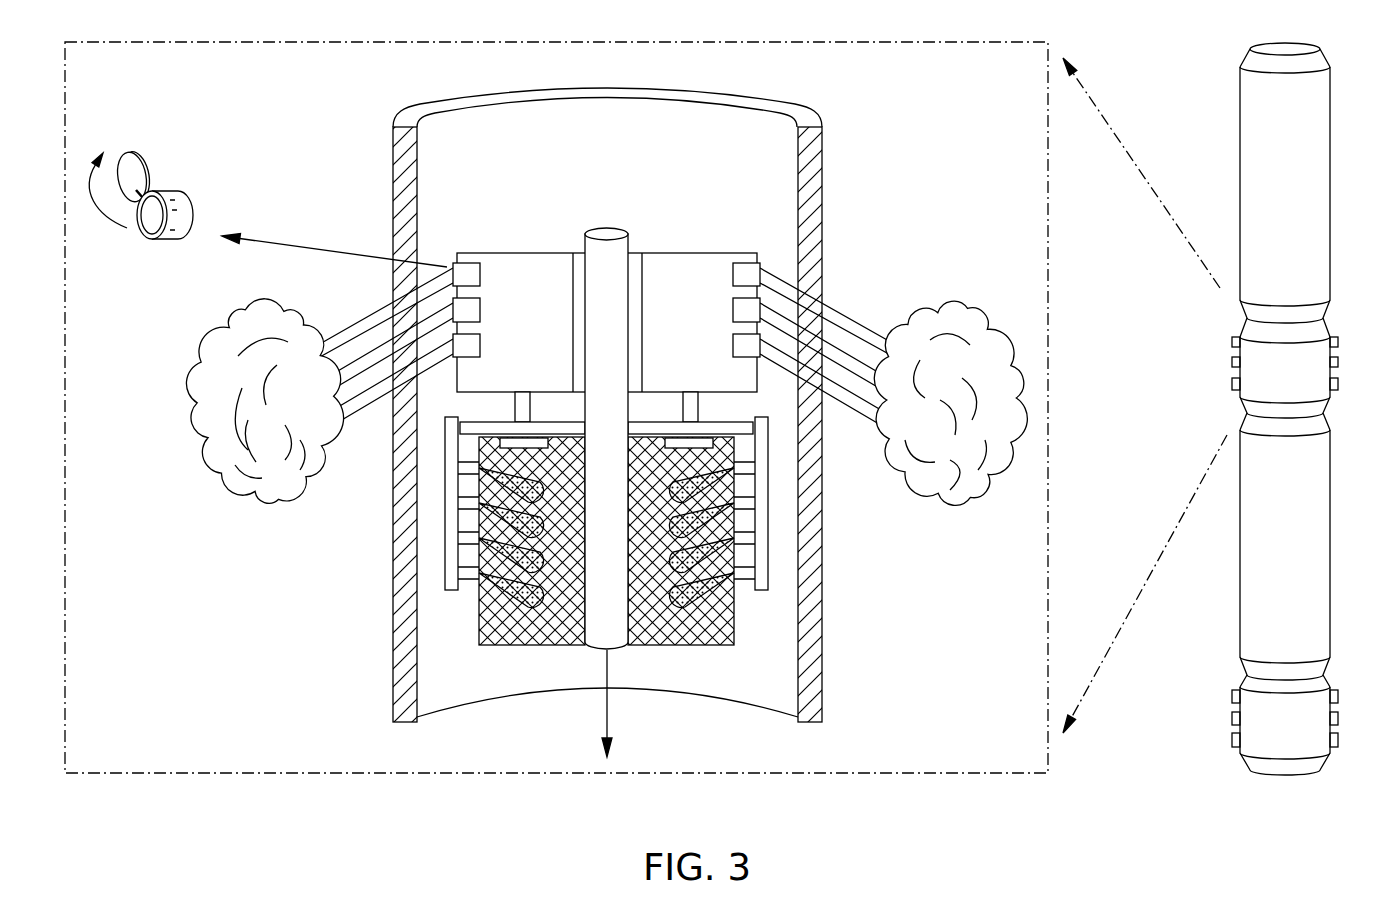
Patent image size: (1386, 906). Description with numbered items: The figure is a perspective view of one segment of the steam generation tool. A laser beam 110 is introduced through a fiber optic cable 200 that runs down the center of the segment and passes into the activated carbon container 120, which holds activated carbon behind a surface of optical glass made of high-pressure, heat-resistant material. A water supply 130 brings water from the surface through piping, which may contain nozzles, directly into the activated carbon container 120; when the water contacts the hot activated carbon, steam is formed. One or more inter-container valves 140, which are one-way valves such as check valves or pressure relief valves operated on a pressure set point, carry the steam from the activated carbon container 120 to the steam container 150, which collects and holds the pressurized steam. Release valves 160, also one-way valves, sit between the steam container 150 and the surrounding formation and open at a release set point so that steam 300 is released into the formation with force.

The laser beam 110 is at (602, 707).
The activated carbon container 120 is at (735, 620).
The water supply 130 is at (445, 571).
The inter-container valves 140 is at (515, 402).
The steam container 150 is at (533, 275).
The release valves 160 is at (190, 218).
The fiber optic cable 200 is at (628, 237).
The steam 300 is at (208, 450).